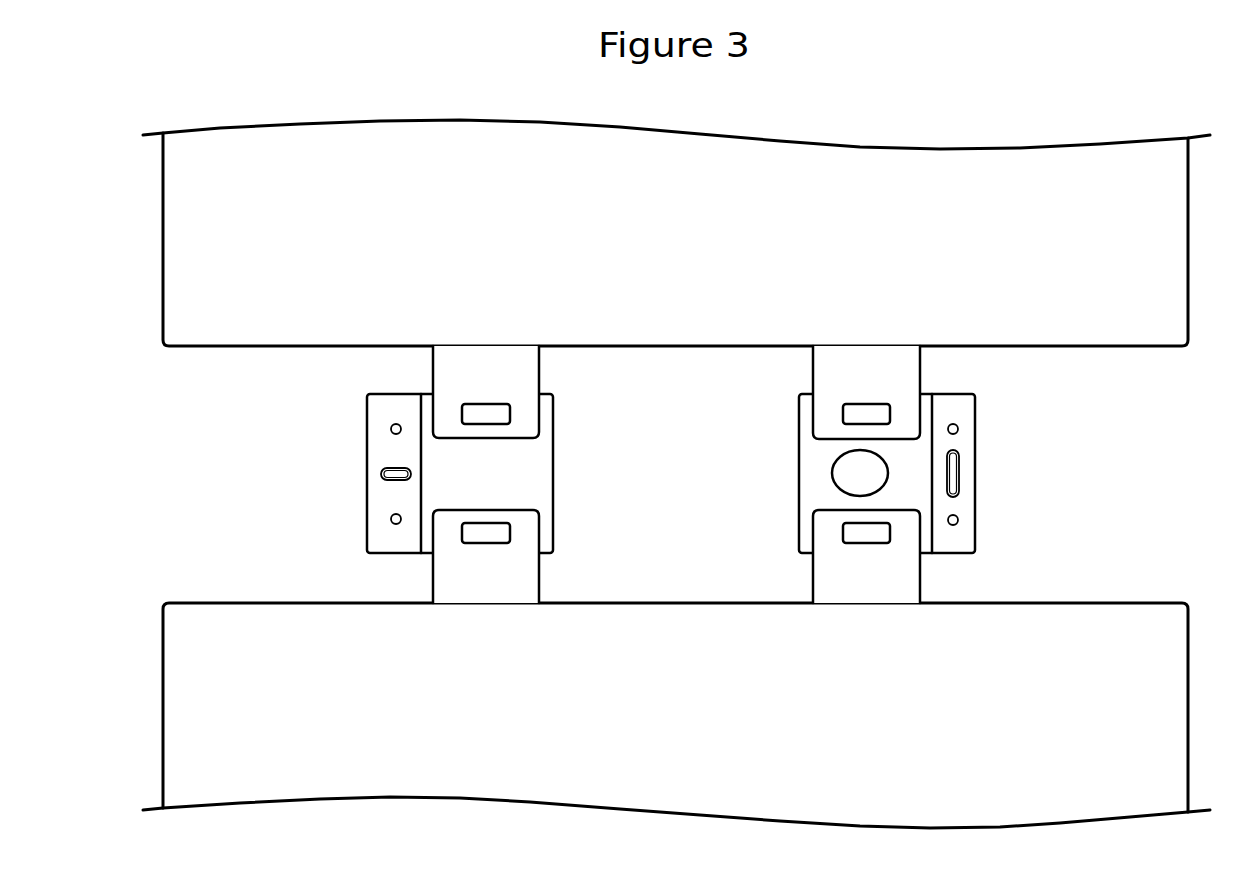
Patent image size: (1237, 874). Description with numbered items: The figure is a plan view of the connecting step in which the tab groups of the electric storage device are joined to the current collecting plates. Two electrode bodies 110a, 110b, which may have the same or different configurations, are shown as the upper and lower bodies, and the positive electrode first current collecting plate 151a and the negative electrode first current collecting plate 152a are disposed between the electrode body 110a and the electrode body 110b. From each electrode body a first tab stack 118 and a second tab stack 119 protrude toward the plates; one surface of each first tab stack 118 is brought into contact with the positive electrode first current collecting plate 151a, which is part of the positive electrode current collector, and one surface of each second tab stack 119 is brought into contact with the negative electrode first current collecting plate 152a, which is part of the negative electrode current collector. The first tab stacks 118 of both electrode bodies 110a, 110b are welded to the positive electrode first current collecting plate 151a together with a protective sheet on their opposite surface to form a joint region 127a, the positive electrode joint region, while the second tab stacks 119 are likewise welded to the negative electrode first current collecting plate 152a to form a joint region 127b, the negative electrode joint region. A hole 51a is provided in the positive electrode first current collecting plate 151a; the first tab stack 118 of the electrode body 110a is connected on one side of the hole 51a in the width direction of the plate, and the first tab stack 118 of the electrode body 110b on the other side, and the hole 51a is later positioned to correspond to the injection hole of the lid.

The electrode body 110a is at (708, 252).
The electrode body 110b is at (708, 735).
The negative electrode first current collecting plate 152a is at (508, 479).
The positive electrode first current collecting plate 151a is at (910, 474).
The second tab stack 119 is at (445, 370).
The first tab stack 118 is at (910, 368).
The joint region 127b is at (510, 414).
The joint region 127a is at (843, 415).
The hole 51a is at (832, 474).